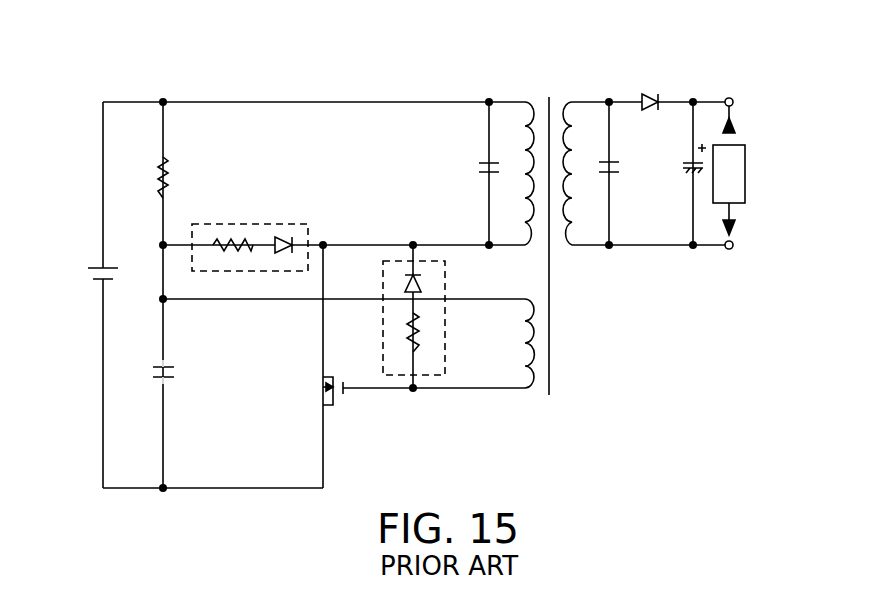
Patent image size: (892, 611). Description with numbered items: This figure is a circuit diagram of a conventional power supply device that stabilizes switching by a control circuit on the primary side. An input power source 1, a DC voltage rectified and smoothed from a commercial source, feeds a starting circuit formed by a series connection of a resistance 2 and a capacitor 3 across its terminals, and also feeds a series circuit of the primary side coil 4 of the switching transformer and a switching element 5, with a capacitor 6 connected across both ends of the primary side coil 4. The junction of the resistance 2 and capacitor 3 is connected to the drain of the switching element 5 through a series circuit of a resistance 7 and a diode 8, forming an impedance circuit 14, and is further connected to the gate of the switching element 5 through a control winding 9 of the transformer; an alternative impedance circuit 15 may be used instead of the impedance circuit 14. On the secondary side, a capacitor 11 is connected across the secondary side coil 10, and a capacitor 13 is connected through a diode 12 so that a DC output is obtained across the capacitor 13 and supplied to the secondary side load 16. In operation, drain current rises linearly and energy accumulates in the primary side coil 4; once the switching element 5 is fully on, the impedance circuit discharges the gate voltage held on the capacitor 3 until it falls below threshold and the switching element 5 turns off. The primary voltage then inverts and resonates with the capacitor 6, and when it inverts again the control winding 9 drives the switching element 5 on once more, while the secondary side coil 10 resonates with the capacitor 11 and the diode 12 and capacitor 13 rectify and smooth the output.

The input power source 1 is at (108, 281).
The resistance 2 is at (165, 175).
The capacitor 3 is at (170, 379).
The primary side coil 4 is at (526, 101).
The switching element 5 is at (323, 388).
The capacitor 6 is at (480, 165).
The resistance 7 is at (247, 243).
The diode 8 is at (285, 232).
The control winding 9 is at (531, 392).
The secondary side coil 10 is at (570, 248).
The capacitor 11 is at (615, 174).
The diode 12 is at (651, 97).
The capacitor 13 is at (684, 165).
The impedance circuit 14 is at (254, 210).
The impedance circuit 15 is at (445, 277).
The secondary side load 16 is at (745, 176).